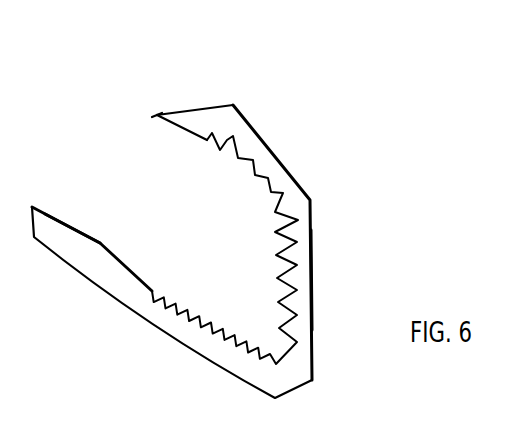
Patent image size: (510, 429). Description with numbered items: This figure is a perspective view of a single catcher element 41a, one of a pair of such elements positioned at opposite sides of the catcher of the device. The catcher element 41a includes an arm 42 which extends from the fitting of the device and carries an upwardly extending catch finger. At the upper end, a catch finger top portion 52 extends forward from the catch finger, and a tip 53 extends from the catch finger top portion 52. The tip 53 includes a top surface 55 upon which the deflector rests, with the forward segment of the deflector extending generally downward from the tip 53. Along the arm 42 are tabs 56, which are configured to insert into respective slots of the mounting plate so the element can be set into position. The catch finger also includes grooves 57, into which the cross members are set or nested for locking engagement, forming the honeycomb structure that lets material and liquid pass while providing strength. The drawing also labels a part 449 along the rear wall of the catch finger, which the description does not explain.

The jaw member 41a is at (344, 84).
The jaw body 42 is at (118, 295).
The upper plate edge 52 is at (267, 158).
The triangular flap 53 is at (203, 127).
The flap apex 55 is at (173, 113).
The arm edge 56 is at (53, 219).
The teeth 57 is at (286, 230).
The right wall 449 is at (303, 284).